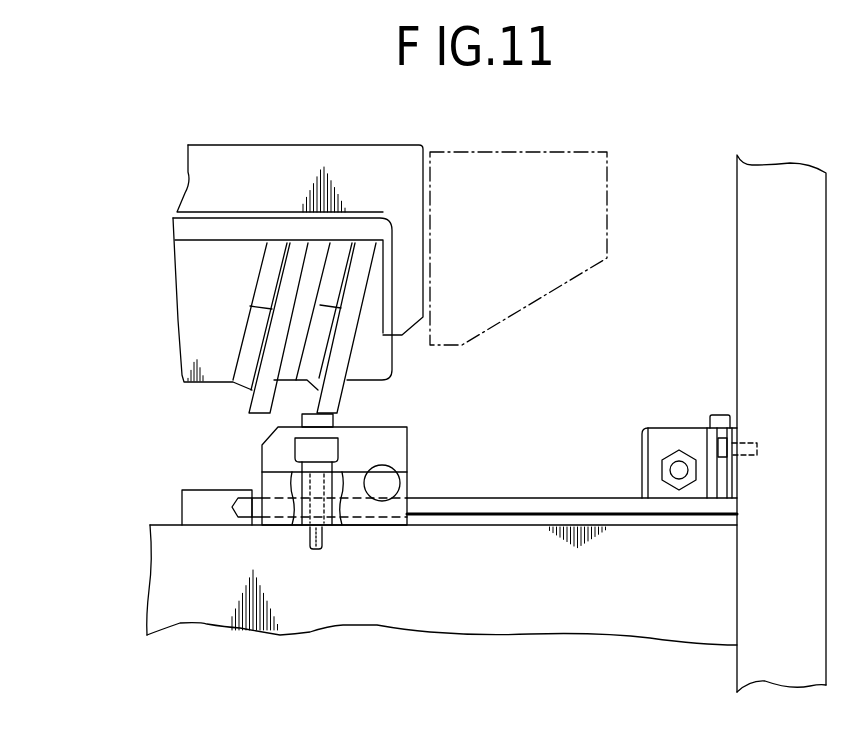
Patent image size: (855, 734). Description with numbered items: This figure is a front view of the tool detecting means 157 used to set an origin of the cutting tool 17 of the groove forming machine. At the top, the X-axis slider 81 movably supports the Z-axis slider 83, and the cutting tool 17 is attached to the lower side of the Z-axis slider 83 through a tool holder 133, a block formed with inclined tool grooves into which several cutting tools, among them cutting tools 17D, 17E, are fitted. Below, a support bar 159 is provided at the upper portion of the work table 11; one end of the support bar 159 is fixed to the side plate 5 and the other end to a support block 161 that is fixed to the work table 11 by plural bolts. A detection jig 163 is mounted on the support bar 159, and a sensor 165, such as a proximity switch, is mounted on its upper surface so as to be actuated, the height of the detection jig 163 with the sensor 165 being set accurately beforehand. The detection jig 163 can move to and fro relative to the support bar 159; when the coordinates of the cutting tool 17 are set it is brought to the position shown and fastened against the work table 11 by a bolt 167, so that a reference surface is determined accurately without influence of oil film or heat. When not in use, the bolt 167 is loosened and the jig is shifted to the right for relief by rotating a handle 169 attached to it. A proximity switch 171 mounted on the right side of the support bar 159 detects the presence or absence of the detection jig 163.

The side plate 5 is at (778, 668).
The work table 11 is at (340, 613).
The cutting tool 17 is at (238, 418).
The cutting tool 17D is at (247, 403).
The cutting tool 17E is at (342, 365).
The X-axis slider 81 is at (587, 183).
The Z-axis slider 83 is at (187, 170).
The tool holder 133 is at (176, 290).
The tool detecting means 157 is at (468, 434).
The support bar 159 is at (494, 498).
The support block 161 is at (182, 514).
The detection jig 163 is at (408, 456).
The sensor 165 is at (335, 420).
The bolt 167 is at (340, 452).
The handle 169 is at (391, 501).
The proximity switch 171 is at (650, 472).